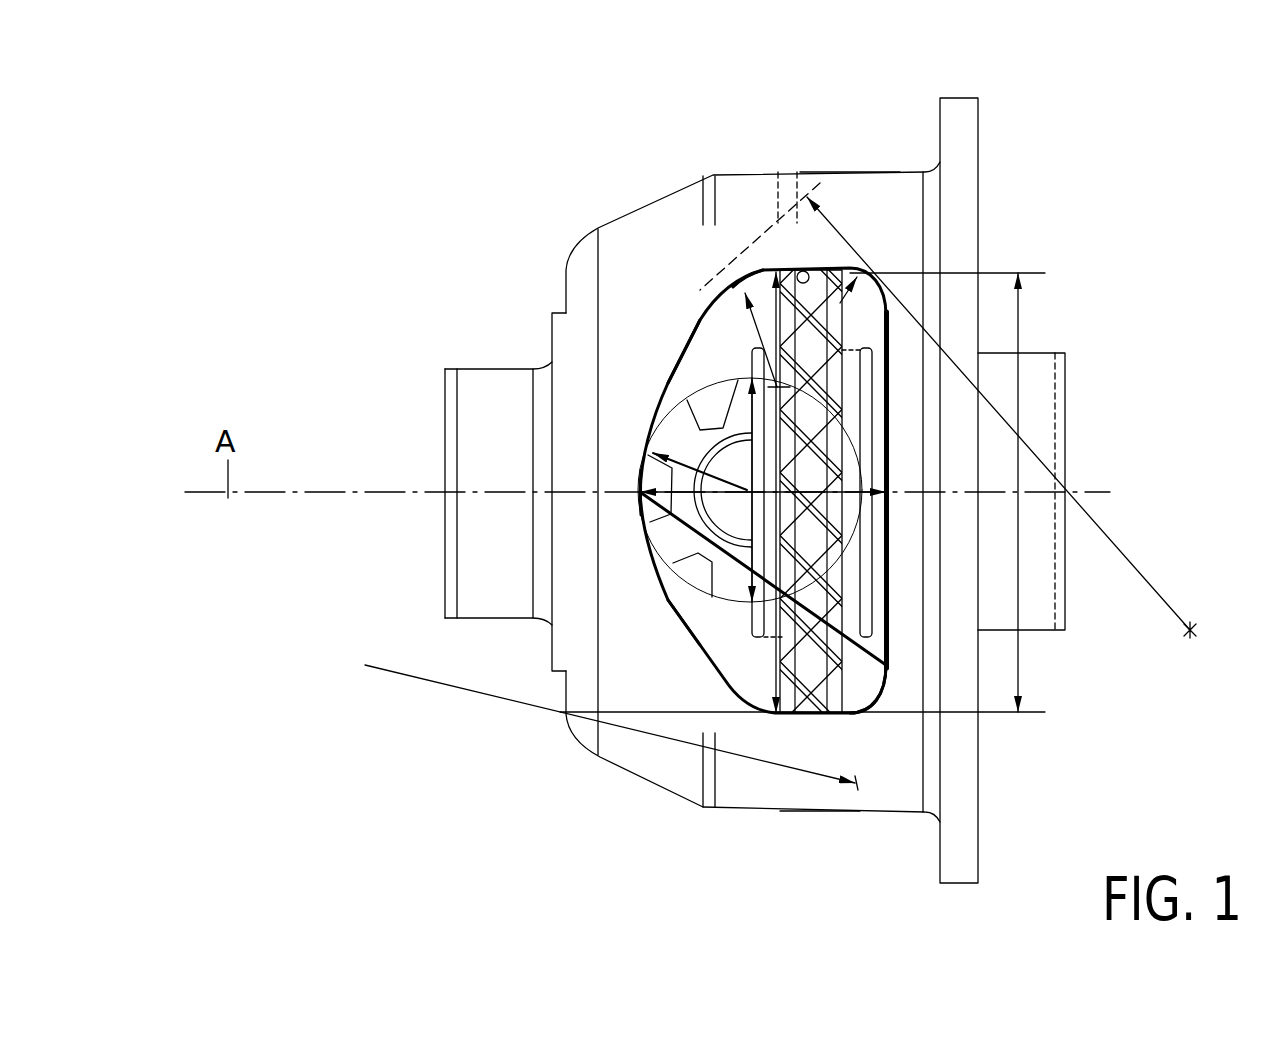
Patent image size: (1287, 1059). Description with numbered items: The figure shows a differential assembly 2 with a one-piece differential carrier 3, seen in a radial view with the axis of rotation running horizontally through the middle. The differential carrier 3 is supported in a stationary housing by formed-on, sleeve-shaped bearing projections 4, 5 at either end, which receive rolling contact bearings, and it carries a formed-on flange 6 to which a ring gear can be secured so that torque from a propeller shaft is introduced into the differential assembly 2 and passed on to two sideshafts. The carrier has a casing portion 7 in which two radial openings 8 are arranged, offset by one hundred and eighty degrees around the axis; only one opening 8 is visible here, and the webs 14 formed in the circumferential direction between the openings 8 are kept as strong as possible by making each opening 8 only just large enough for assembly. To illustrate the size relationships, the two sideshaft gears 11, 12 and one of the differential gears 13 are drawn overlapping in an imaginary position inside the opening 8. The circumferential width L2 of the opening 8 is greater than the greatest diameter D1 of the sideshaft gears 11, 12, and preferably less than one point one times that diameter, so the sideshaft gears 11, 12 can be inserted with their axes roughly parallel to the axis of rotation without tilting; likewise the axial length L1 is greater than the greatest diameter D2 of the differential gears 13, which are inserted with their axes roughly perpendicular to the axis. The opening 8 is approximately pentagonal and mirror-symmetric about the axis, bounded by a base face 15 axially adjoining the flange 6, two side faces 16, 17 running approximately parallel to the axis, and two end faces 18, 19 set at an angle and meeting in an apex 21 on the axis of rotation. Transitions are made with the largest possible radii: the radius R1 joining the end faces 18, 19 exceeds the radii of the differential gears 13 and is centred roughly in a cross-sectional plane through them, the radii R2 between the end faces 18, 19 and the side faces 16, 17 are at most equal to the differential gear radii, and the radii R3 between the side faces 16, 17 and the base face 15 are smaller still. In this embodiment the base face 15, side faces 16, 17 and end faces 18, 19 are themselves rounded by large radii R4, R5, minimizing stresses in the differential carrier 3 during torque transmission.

The differential assembly 2 is at (783, 461).
The one-piece differential carrier 3 is at (620, 220).
The sleeve-shaped bearing projection 4 is at (1045, 360).
The sleeve-shaped bearing projection 5 is at (477, 388).
The flange 6 is at (967, 132).
The casing portion 7 is at (850, 187).
The radial opening 8 is at (725, 335).
The sideshaft gear 11 is at (850, 683).
The sideshaft gear 12 is at (795, 716).
The differential gear 13 is at (688, 552).
The web 14 is at (815, 805).
The base face 15 is at (872, 583).
The side face 16 is at (862, 717).
The side face 17 is at (788, 265).
The end face 18 is at (693, 617).
The end face 19 is at (690, 367).
The apex 21 is at (640, 493).
The greatest diameter of the sideshaft gears D1 is at (813, 492).
The greatest diameter of the differential gears D2 is at (733, 515).
The axial length of the opening L1 is at (763, 517).
The width of the opening in the circumferential direction L2 is at (752, 492).
The radius connecting the end faces R1 is at (700, 460).
The radius between end faces and side faces R2 is at (754, 340).
The radius between side faces and base face R3 is at (858, 304).
The large radius of the rounded faces R4 is at (948, 410).
The large radius of the rounded faces R5 is at (611, 727).